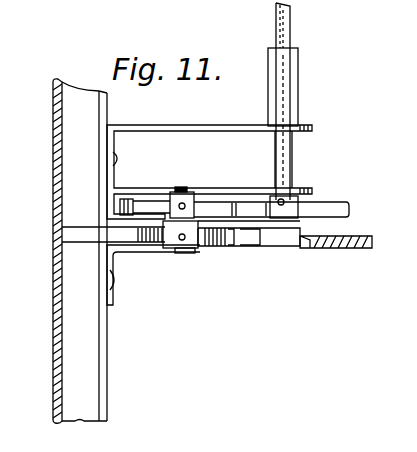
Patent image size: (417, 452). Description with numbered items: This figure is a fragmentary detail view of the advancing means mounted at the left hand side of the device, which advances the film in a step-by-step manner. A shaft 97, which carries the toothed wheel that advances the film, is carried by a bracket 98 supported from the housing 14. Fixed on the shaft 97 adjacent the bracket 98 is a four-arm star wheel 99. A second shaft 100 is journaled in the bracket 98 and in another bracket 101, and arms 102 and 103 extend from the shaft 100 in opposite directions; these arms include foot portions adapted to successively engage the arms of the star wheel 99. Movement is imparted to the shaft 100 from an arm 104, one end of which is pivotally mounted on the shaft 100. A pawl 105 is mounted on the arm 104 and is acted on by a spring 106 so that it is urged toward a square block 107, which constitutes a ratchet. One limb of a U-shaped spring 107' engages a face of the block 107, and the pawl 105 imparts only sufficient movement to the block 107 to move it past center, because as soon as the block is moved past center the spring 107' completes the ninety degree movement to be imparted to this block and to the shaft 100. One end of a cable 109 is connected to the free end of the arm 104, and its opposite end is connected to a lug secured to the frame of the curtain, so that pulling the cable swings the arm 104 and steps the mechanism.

The housing 14 is at (52, 351).
The shaft 97 is at (291, 36).
The bracket 98 is at (232, 126).
The four-arm star wheel 99 is at (326, 205).
The shaft 100 is at (182, 190).
The bracket 101 is at (152, 256).
The arm 102 is at (226, 241).
The arm 103 is at (137, 209).
The arm 104 is at (292, 244).
The pawl 105 is at (200, 250).
The spring 106 is at (252, 246).
The square block 107 is at (188, 297).
The U-shaped spring 107' is at (88, 256).
The cable 109 is at (362, 236).